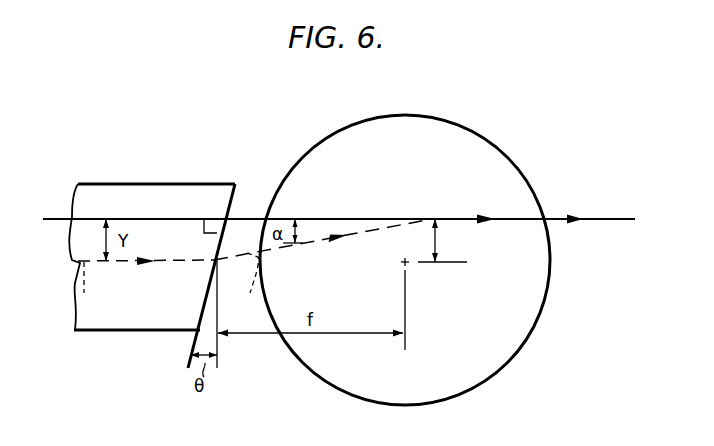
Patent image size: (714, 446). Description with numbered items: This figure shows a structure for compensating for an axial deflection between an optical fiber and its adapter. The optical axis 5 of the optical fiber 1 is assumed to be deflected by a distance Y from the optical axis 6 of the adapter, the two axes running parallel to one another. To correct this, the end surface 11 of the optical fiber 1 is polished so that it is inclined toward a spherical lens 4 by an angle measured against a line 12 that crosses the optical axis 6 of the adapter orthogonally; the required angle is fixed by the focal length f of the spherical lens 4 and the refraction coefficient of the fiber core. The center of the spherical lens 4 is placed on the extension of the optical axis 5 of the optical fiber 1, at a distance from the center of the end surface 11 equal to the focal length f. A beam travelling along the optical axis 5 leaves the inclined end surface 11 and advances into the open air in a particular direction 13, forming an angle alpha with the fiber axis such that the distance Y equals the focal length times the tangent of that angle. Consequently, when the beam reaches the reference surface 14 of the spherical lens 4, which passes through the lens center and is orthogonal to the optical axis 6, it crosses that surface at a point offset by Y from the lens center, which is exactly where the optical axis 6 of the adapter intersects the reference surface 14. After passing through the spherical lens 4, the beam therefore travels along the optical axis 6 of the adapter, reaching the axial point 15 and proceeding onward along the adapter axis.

The optical fiber 1 is at (137, 183).
The spherical lens 4 is at (522, 172).
The optical axis of the optical fiber 5 is at (84, 293).
The optical axis of the adapter 6 is at (55, 217).
The end surface of optical fiber 11 is at (236, 196).
The line crossing orthogonally with the optical axis of the adapter 12 is at (217, 347).
The direction of travel of the optical beam 13 is at (252, 290).
The reference surface of the spherical lens 14 is at (406, 326).
The image point on axis 15 is at (428, 218).